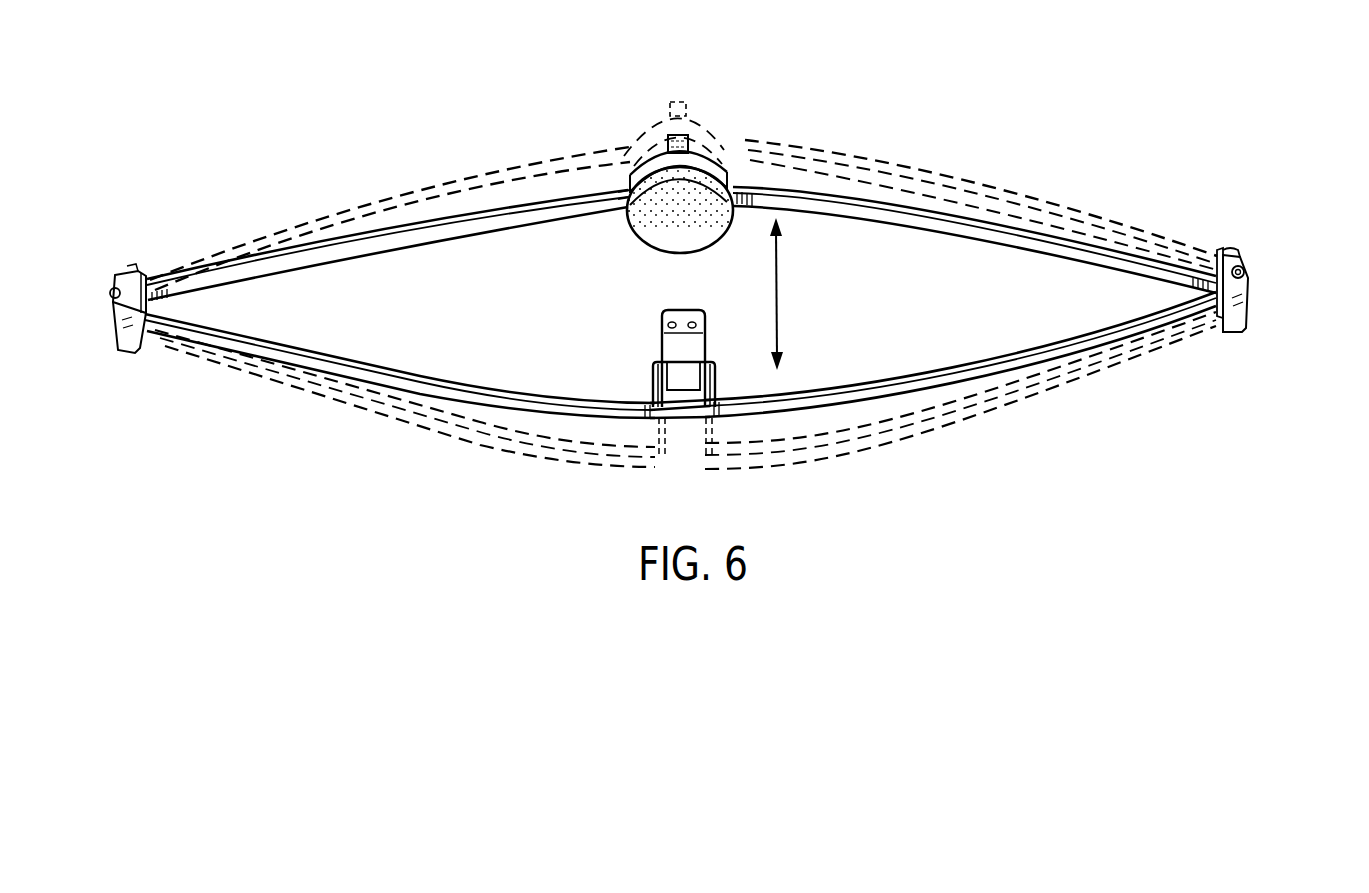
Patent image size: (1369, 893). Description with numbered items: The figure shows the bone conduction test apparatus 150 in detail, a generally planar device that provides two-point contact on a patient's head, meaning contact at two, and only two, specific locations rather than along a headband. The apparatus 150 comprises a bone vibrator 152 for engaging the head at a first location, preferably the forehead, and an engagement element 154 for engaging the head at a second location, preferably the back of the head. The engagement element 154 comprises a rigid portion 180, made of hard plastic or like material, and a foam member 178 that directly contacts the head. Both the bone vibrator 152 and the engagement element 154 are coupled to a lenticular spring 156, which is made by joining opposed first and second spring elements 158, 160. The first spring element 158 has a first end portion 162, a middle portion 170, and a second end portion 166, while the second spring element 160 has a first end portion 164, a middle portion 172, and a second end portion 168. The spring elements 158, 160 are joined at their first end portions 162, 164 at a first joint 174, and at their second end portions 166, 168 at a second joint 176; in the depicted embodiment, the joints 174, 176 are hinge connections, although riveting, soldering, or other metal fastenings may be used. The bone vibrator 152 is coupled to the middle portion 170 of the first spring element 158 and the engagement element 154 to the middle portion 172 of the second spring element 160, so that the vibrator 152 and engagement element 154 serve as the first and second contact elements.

The bone conduction test apparatus 150 is at (357, 188).
The bone vibrator 152 is at (707, 323).
The engagement element 154 is at (630, 172).
The lenticular spring 156 is at (440, 222).
The first spring element 158 is at (983, 376).
The second spring element 160 is at (933, 215).
The first end portion 162 is at (1211, 318).
The first end portion 164 is at (1194, 270).
The second end portion 166 is at (188, 332).
The second end portion 168 is at (197, 270).
The middle portion 170 is at (634, 420).
The middle portion 172 is at (620, 190).
The first joint 174 is at (1258, 268).
The second joint 176 is at (97, 290).
The foam member 178 is at (733, 190).
The rigid portion 180 is at (720, 148).